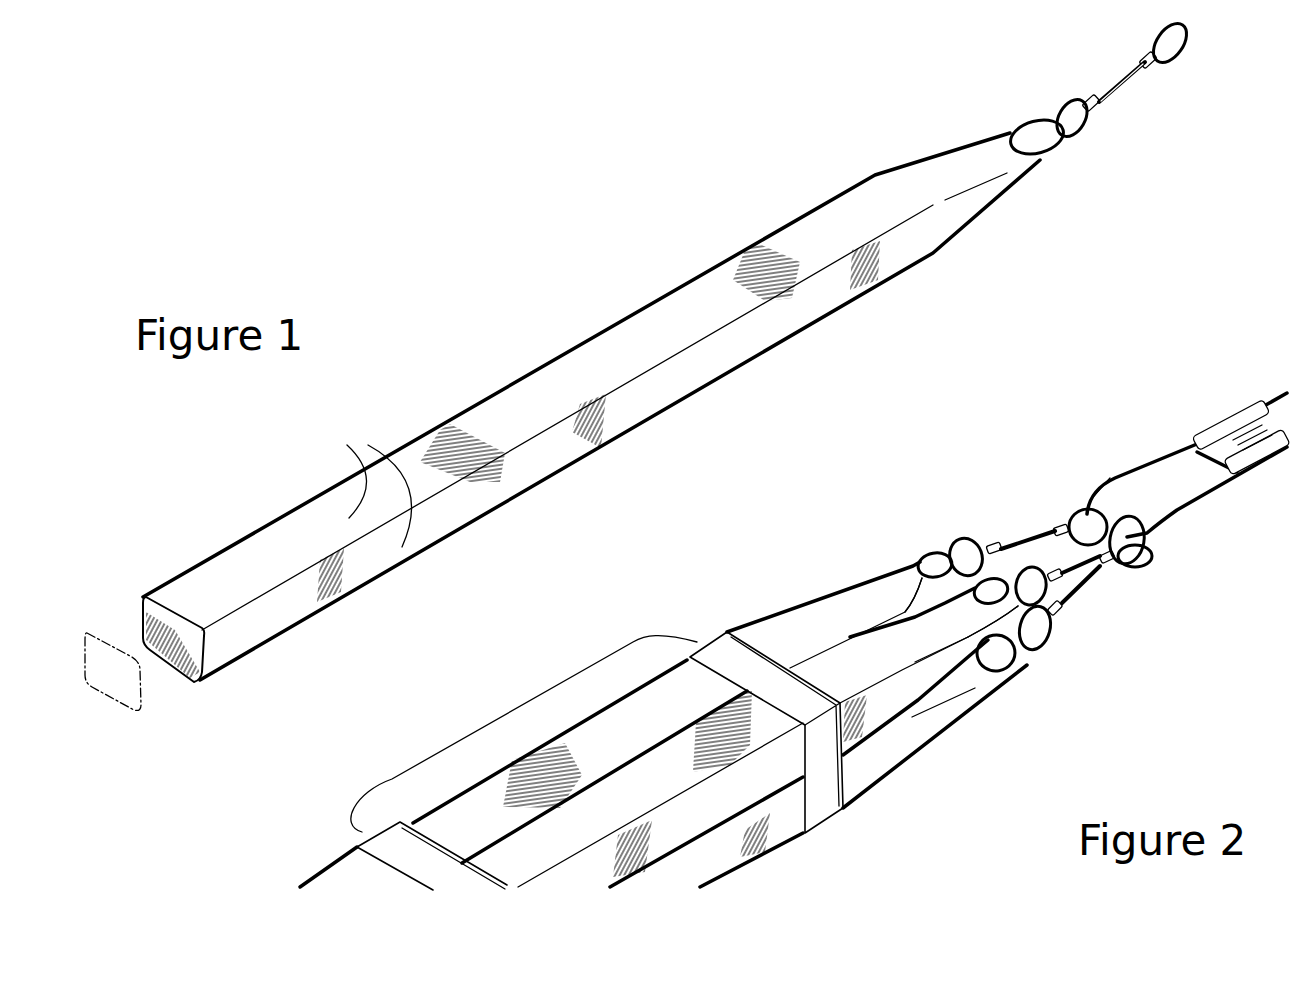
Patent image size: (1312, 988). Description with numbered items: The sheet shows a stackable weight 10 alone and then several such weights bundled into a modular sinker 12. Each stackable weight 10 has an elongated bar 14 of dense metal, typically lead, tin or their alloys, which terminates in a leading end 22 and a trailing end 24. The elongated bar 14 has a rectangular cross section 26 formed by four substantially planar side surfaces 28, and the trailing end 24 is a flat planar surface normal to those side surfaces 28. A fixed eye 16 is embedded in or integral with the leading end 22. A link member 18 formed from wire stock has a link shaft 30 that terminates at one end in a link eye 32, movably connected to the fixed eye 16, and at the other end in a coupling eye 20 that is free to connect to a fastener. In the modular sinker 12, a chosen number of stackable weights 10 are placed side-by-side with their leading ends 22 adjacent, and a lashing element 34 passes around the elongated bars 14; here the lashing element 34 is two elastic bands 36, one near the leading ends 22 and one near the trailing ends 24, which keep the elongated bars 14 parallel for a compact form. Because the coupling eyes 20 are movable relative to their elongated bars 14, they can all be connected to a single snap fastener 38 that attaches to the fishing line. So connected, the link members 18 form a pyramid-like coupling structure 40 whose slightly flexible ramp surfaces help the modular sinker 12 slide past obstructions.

In FIG. 1, the stackable weight 10 is at (460, 186).
In FIG. 2, the stackable weight 10 is at (918, 705).
In FIG. 2, the modular sinker 12 is at (987, 452).
In FIG. 1, the elongated bar 14 is at (540, 366).
In FIG. 2, the elongated bar 14 is at (825, 645).
In FIG. 1, the fixed eye 16 is at (1010, 122).
In FIG. 2, the fixed eye 16 is at (957, 603).
In FIG. 1, the link member 18 is at (1128, 107).
In FIG. 2, the link member 18 is at (1060, 588).
In FIG. 1, the coupling eye 20 is at (1176, 66).
In FIG. 2, the coupling eye 20 is at (1128, 515).
In FIG. 1, the leading end 22 is at (953, 172).
In FIG. 2, the leading end 22 is at (930, 653).
In FIG. 1, the trailing end 24 is at (172, 600).
In FIG. 1, the rectangular cross section 26 is at (131, 716).
In FIG. 1, the side surfaces 28 is at (360, 485).
In FIG. 1, the link shaft 30 is at (1112, 80).
In FIG. 1, the link eye 32 is at (1061, 103).
In FIG. 2, the lashing element 34 is at (490, 720).
In FIG. 2, the elastic bands 36 is at (722, 640).
In FIG. 2, the snap fastener 38 is at (1220, 440).
In FIG. 2, the coupling structure 40 is at (1041, 505).